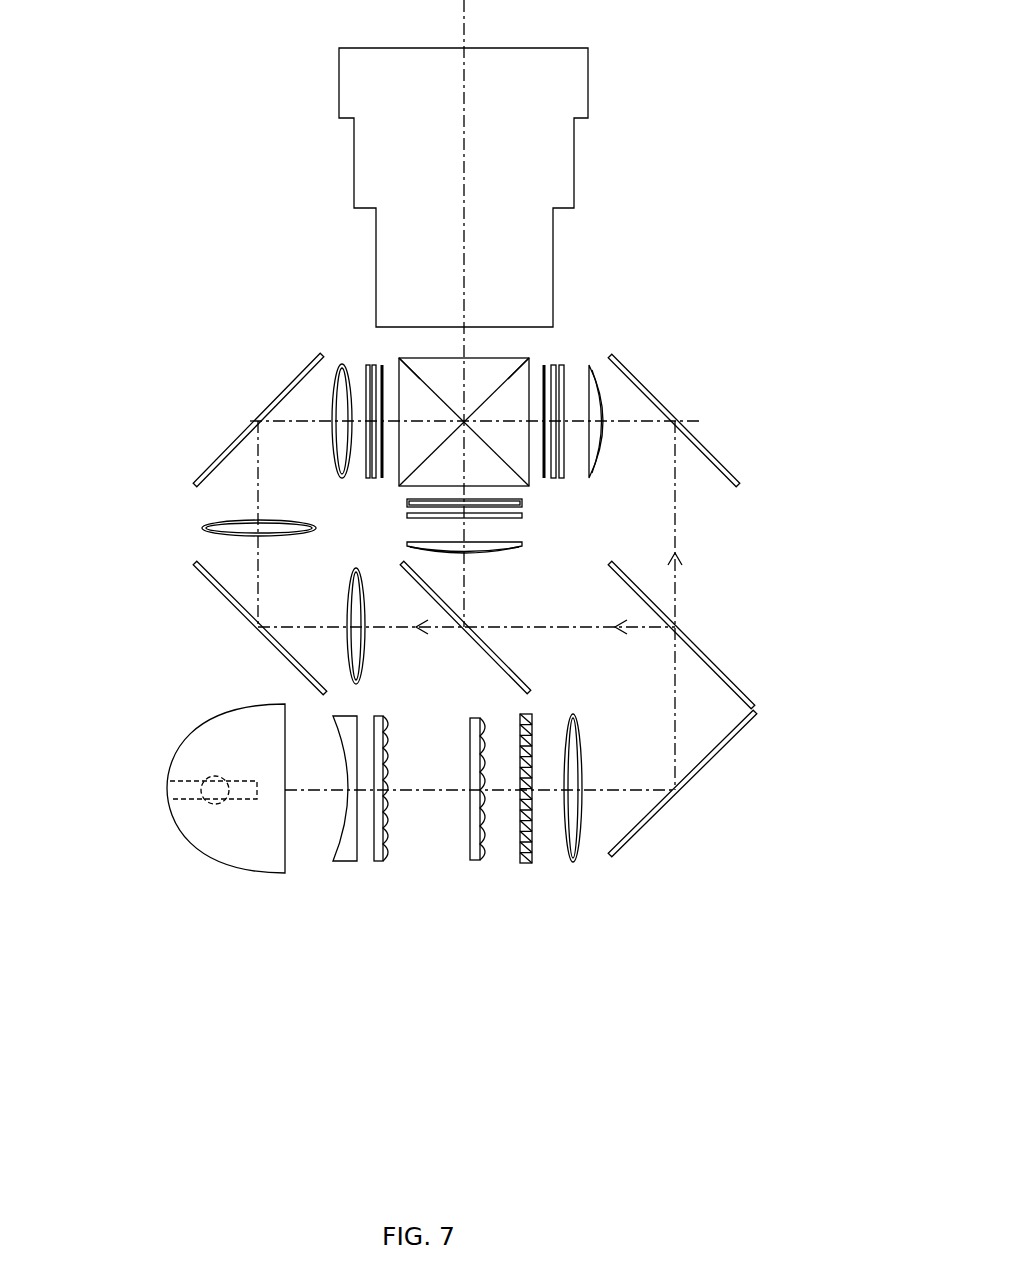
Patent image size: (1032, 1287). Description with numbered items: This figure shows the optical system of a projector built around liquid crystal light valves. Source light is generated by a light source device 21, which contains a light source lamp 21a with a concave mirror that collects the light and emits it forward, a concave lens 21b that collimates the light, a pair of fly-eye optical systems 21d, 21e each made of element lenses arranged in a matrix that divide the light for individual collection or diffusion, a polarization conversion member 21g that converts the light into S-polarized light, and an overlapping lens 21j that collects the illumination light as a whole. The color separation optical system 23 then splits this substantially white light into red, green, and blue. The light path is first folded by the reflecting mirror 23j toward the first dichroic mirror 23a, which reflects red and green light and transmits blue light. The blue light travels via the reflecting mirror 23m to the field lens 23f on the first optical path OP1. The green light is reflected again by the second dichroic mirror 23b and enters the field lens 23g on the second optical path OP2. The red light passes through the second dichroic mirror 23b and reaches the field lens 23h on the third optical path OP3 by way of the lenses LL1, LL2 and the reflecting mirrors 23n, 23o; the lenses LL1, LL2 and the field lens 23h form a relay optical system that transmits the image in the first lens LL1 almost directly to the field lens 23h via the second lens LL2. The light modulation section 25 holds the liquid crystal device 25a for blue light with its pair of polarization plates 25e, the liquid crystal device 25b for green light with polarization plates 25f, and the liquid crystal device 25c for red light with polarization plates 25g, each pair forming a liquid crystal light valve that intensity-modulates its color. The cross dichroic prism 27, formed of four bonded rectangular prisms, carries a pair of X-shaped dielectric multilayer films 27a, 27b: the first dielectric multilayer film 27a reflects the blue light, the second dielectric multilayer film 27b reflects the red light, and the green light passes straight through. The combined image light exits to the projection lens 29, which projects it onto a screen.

The light source device 21 is at (393, 942).
The light source lamp 21a is at (243, 857).
The concave lens 21b is at (345, 858).
The fly-eye optical system 21d is at (378, 860).
The fly-eye optical system 21e is at (475, 860).
The polarization conversion member 21g is at (526, 863).
The superimposing lens 21j is at (573, 862).
The color separation optical system 23 is at (237, 645).
The first dichroic mirror 23a is at (717, 665).
The second dichroic mirror 23b is at (517, 665).
The field lens 23f is at (602, 410).
The field lens 23g is at (522, 542).
The field lens 23h is at (333, 447).
The reflecting mirror 23j is at (652, 823).
The reflecting mirror 23m is at (723, 460).
The reflecting mirror 23n is at (225, 597).
The reflecting mirror 23o is at (213, 460).
The light modulation section 25 is at (573, 362).
The liquid crystal device 25a is at (557, 452).
The liquid crystal device 25b is at (522, 503).
The liquid crystal device 25c is at (372, 410).
The polarization plate 25e is at (545, 480).
The polarization plate 25f is at (383, 480).
The polarization plate 25g is at (368, 480).
The cross dichroic prism 27 is at (437, 348).
The first dielectric multilayer film 27a is at (405, 358).
The second dielectric multilayer film 27b is at (527, 358).
The projection lens 29 is at (528, 142).
The first lens LL1 is at (362, 667).
The second lens LL2 is at (202, 528).
The first optical path OP1 is at (675, 512).
The second optical path OP2 is at (467, 577).
The third optical path OP3 is at (259, 500).